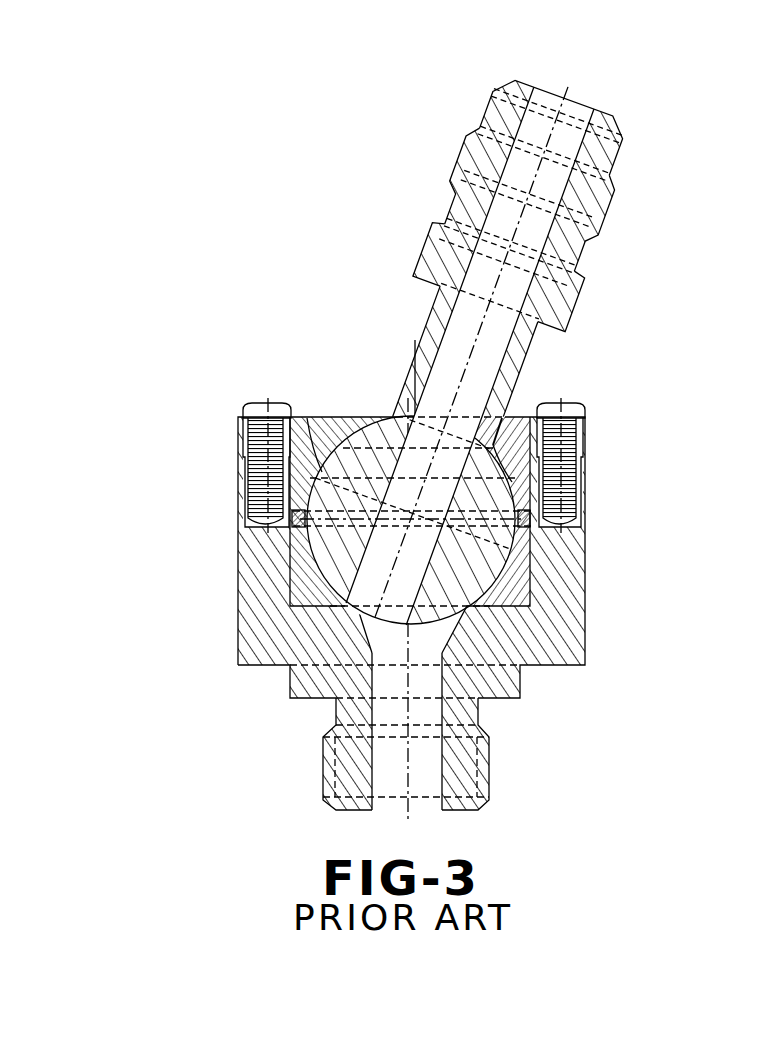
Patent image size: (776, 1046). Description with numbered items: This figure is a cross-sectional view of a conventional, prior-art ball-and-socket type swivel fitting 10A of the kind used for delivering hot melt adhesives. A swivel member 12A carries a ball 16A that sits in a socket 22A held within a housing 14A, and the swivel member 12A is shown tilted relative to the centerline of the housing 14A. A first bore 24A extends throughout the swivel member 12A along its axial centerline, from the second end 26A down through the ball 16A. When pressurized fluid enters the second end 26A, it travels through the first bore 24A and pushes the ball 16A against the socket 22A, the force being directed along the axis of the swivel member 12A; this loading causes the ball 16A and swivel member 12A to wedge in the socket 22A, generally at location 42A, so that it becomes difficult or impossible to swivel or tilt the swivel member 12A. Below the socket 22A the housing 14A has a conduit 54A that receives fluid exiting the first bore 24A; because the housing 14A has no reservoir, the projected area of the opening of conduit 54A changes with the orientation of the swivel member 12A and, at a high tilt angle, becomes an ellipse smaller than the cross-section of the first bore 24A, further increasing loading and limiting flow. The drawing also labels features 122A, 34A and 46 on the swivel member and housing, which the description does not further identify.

The swivel fitting 10A is at (635, 425).
The swivel member 12A is at (513, 358).
The housing 14A is at (548, 655).
The ball 16A is at (345, 562).
The socket 22A is at (507, 583).
The first bore 24A is at (563, 142).
The second end 26A is at (617, 124).
The jam nut 122A is at (600, 218).
The threaded boss 34A is at (467, 812).
The bearing cap insert 42A is at (305, 423).
The seal ring 46 is at (292, 530).
The conduit 54A is at (389, 780).